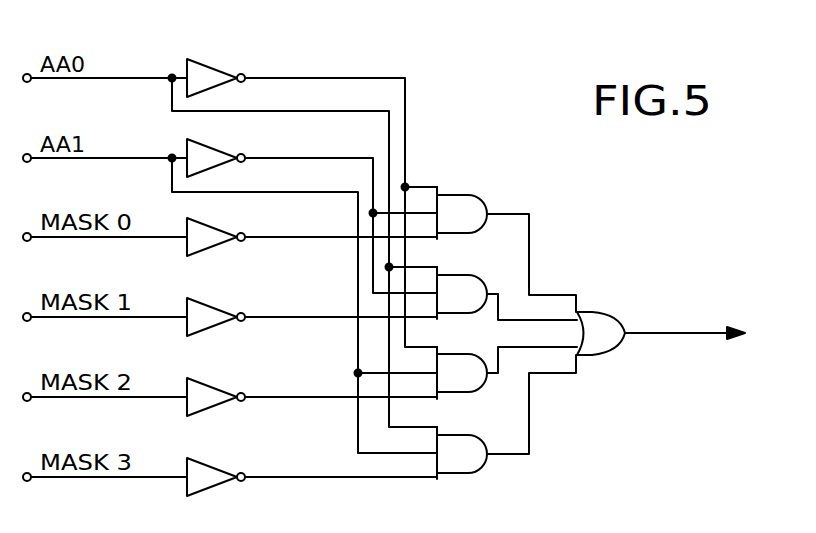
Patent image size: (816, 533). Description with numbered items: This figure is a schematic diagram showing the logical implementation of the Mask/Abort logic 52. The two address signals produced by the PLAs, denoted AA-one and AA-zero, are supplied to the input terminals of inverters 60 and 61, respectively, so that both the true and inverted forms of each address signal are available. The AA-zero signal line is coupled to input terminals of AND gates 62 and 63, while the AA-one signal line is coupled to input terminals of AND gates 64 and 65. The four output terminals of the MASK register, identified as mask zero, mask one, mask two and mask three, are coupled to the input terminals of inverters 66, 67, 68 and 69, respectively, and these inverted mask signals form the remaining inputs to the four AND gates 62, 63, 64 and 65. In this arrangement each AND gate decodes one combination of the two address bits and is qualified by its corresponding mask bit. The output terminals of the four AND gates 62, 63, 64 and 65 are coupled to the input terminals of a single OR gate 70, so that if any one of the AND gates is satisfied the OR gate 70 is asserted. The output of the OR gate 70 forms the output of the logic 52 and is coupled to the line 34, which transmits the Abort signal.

The inverter 60 is at (213, 69).
The inverter 61 is at (217, 151).
The inverter 66 is at (217, 228).
The inverter 67 is at (219, 310).
The inverter 68 is at (218, 393).
The inverter 69 is at (218, 472).
The AND gate 64 is at (470, 194).
The AND gate 62 is at (470, 275).
The AND gate 65 is at (463, 392).
The AND gate 63 is at (463, 473).
The OR gate 70 is at (602, 348).
The Abort signal line 34 is at (660, 335).
The Mask/Abort logic 52 is at (399, 293).